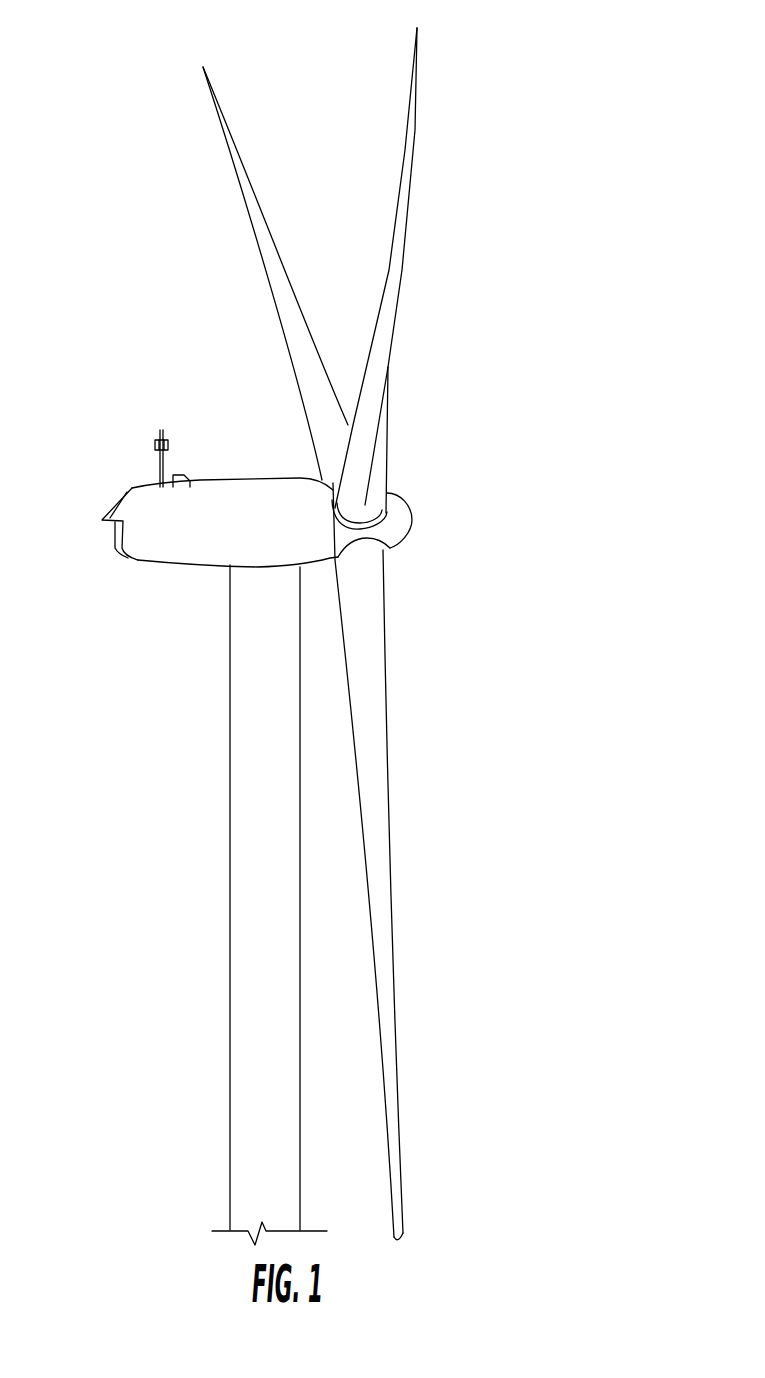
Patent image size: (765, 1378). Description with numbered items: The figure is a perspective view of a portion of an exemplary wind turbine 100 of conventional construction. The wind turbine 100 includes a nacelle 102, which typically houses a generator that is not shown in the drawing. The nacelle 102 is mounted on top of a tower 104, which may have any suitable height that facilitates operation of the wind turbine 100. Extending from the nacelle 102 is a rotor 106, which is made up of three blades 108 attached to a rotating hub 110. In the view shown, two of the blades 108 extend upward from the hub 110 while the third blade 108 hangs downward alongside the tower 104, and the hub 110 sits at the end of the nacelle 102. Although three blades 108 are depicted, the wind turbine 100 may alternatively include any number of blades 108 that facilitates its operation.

The wind turbine 100 is at (122, 157).
The nacelle 102 is at (160, 567).
The tower 104 is at (230, 848).
The rotor 106 is at (527, 258).
The blades 108 is at (240, 155).
The rotating hub 110 is at (410, 533).